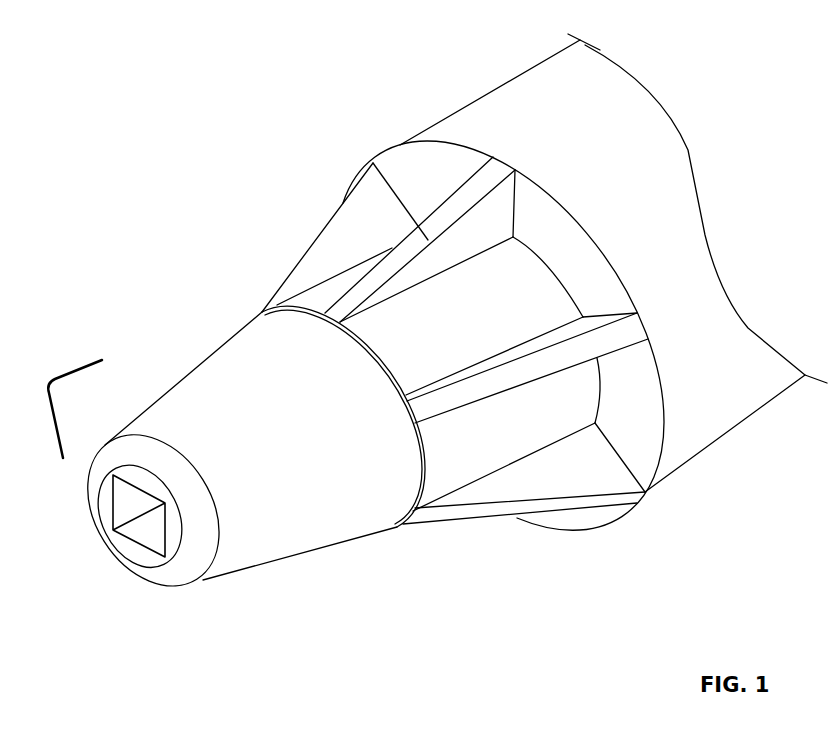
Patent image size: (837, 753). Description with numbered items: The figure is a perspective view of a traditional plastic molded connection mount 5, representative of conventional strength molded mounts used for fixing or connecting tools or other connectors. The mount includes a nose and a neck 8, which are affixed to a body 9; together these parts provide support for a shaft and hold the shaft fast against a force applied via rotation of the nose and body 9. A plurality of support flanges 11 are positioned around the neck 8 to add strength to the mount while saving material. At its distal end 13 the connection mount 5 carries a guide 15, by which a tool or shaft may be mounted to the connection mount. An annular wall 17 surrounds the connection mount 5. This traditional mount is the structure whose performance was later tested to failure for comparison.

The collar ring 5 is at (253, 313).
The conical inner surface 8 is at (475, 323).
The mounting plate 9 is at (693, 451).
The rib 11 is at (548, 475).
The bracket 13 is at (77, 368).
The triangular socket 15 is at (137, 550).
The nose end face 17 is at (208, 553).